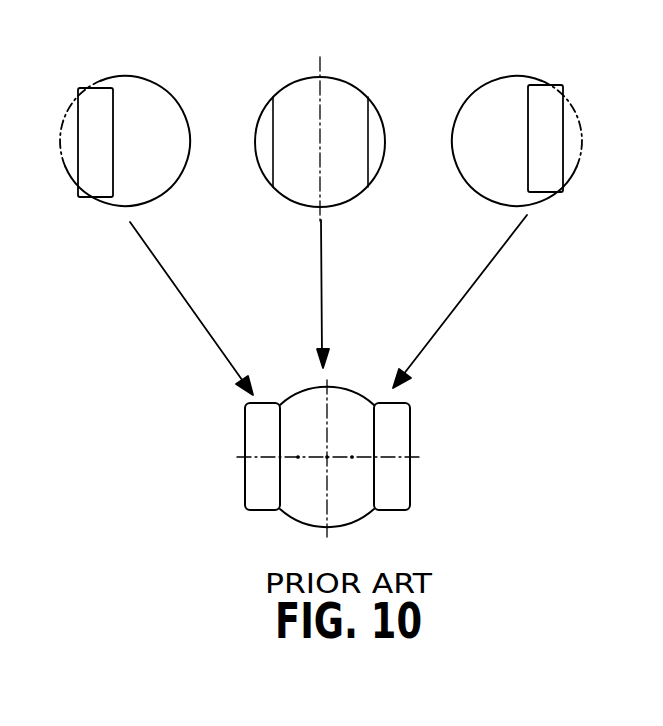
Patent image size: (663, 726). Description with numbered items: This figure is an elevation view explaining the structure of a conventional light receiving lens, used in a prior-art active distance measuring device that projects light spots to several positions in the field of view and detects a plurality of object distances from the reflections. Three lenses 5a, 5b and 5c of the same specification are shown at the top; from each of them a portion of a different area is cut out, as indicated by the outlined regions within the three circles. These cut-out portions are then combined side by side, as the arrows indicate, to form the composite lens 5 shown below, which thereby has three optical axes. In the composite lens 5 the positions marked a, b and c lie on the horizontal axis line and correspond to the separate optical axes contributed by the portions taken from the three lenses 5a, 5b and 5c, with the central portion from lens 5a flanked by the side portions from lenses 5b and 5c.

The composite lens 5 is at (340, 512).
The lens 5a is at (340, 85).
The lens 5b is at (95, 98).
The lens 5c is at (538, 95).
The center point a is at (326, 455).
The point b is at (298, 460).
The point c is at (352, 460).